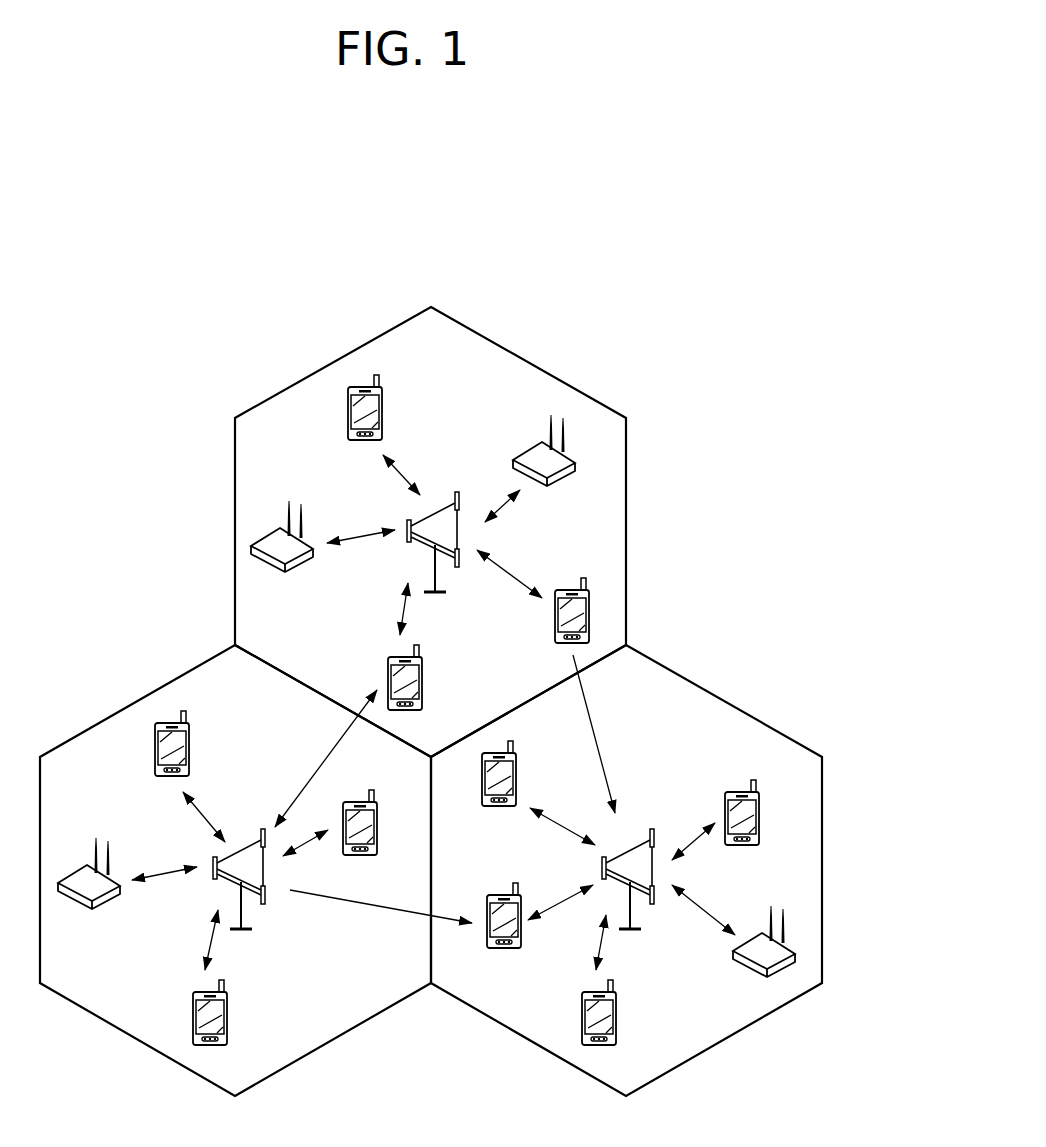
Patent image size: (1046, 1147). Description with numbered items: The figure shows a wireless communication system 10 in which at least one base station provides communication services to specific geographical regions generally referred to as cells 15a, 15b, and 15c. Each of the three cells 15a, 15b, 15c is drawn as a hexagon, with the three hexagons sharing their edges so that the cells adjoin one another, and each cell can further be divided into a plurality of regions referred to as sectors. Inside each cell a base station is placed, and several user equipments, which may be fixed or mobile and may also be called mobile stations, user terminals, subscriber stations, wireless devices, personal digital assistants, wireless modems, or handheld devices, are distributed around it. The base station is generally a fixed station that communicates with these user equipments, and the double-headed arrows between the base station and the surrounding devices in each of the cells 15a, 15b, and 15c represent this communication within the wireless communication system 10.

The wireless communication system 10 is at (709, 423).
The cell 15a is at (626, 520).
The cell 15b is at (750, 708).
The cell 15c is at (111, 708).